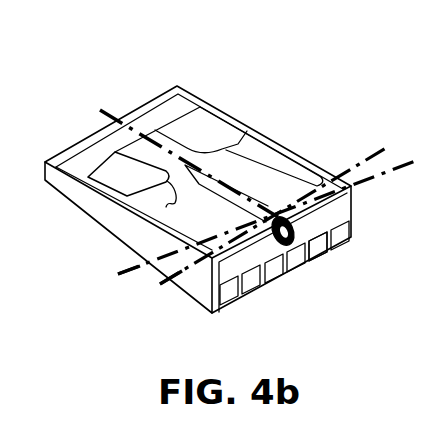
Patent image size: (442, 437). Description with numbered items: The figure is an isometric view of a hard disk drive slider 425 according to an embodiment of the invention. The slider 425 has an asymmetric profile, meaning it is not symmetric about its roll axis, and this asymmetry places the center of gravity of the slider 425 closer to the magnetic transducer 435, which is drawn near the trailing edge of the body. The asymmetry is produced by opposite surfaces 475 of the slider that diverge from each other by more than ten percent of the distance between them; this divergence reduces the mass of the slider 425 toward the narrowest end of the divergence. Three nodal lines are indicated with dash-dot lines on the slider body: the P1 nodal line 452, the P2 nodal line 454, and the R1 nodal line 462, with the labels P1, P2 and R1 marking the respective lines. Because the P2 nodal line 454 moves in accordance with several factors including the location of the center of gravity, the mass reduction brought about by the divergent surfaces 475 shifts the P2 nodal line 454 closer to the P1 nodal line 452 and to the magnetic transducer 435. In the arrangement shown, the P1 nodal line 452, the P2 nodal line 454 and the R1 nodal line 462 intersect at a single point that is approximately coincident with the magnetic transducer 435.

The hard disk drive slider 425 is at (136, 79).
The magnetic transducer 435 is at (278, 246).
The P1 nodal line 452 is at (354, 162).
The P2 nodal line 454 is at (403, 162).
The R1 nodal line 462 is at (318, 252).
The opposite surfaces 475 is at (115, 152).
The P1 nodal line P1 is at (157, 288).
The P2 nodal line P2 is at (114, 279).
The R1 nodal line R1 is at (318, 239).